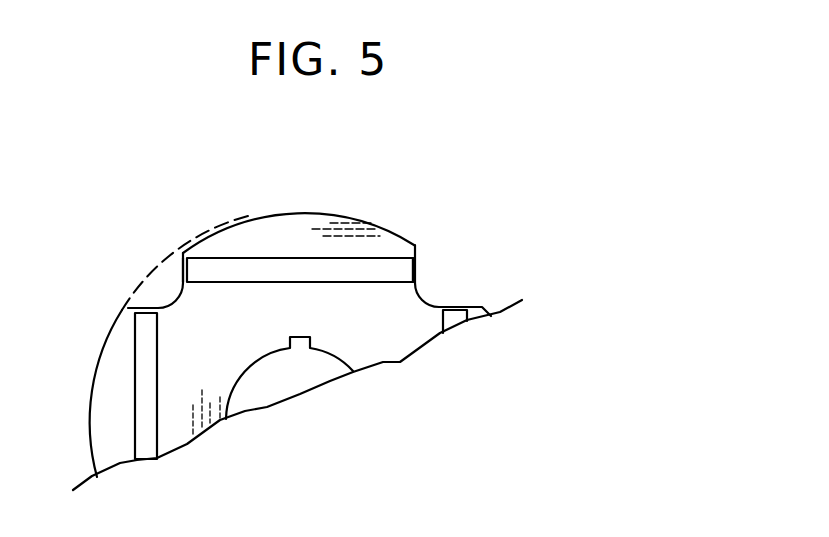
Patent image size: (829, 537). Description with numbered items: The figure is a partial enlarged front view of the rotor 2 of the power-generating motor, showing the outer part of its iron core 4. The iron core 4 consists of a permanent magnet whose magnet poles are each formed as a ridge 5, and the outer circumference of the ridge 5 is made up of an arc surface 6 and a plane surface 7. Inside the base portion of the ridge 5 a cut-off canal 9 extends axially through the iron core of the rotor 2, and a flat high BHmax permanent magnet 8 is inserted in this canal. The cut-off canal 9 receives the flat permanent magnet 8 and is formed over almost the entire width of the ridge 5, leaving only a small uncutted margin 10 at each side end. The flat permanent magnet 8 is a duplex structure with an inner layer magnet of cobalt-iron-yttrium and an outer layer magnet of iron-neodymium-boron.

The rotor 2 is at (237, 192).
The iron core 4 is at (113, 317).
The ridge 5 is at (65, 347).
The arc surface 6 is at (340, 212).
The plane surface 7 is at (203, 247).
The flat high BHmax permanent magnet 8 is at (390, 267).
The cut-off canal 9 is at (358, 258).
The uncutted margin 10 is at (186, 270).